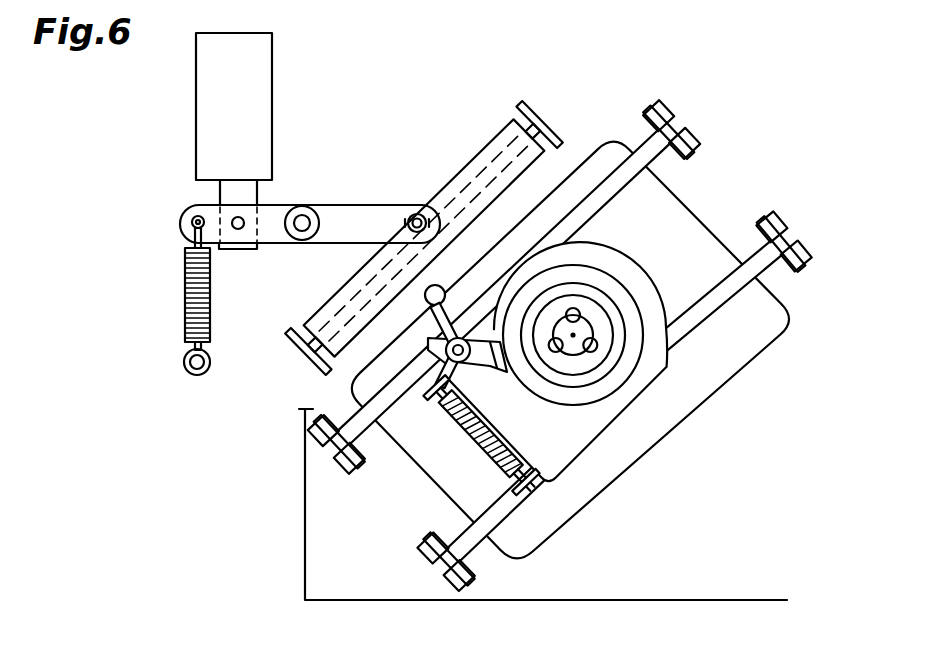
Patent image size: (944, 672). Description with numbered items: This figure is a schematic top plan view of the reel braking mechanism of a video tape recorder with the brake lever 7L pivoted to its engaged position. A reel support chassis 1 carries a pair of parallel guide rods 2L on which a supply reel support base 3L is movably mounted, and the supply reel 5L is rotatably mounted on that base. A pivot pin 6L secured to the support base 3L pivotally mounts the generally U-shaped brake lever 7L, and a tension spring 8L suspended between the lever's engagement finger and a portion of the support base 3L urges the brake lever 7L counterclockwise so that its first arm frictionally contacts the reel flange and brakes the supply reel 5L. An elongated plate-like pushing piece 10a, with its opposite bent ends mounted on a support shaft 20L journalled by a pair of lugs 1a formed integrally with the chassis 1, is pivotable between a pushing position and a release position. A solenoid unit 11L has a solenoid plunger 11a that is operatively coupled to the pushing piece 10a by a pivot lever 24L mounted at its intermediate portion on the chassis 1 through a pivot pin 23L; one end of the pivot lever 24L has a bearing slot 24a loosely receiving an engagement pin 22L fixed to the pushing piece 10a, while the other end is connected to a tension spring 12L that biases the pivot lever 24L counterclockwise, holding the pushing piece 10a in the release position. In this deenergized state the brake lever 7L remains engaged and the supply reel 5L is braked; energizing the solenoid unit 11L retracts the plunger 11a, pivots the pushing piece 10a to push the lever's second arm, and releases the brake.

The reel support chassis 1 is at (693, 601).
The lugs 1a is at (550, 117).
The parallel guide rods 2L is at (627, 188).
The supply reel support base 3L is at (587, 433).
The supply reel 5L is at (637, 380).
The pivot pin 6L is at (428, 345).
The brake lever 7L is at (487, 362).
The tension spring 8L is at (482, 450).
The plate-like pushing piece 10a is at (467, 157).
The solenoid unit 11L is at (262, 100).
The solenoid plunger 11a is at (230, 191).
The tension spring 12L is at (183, 298).
The support shaft 20L is at (537, 112).
The engagement pin 22L is at (417, 214).
The pivot pin 23L is at (302, 217).
The pivot lever 24L is at (360, 214).
The bearing slot 24a is at (380, 232).